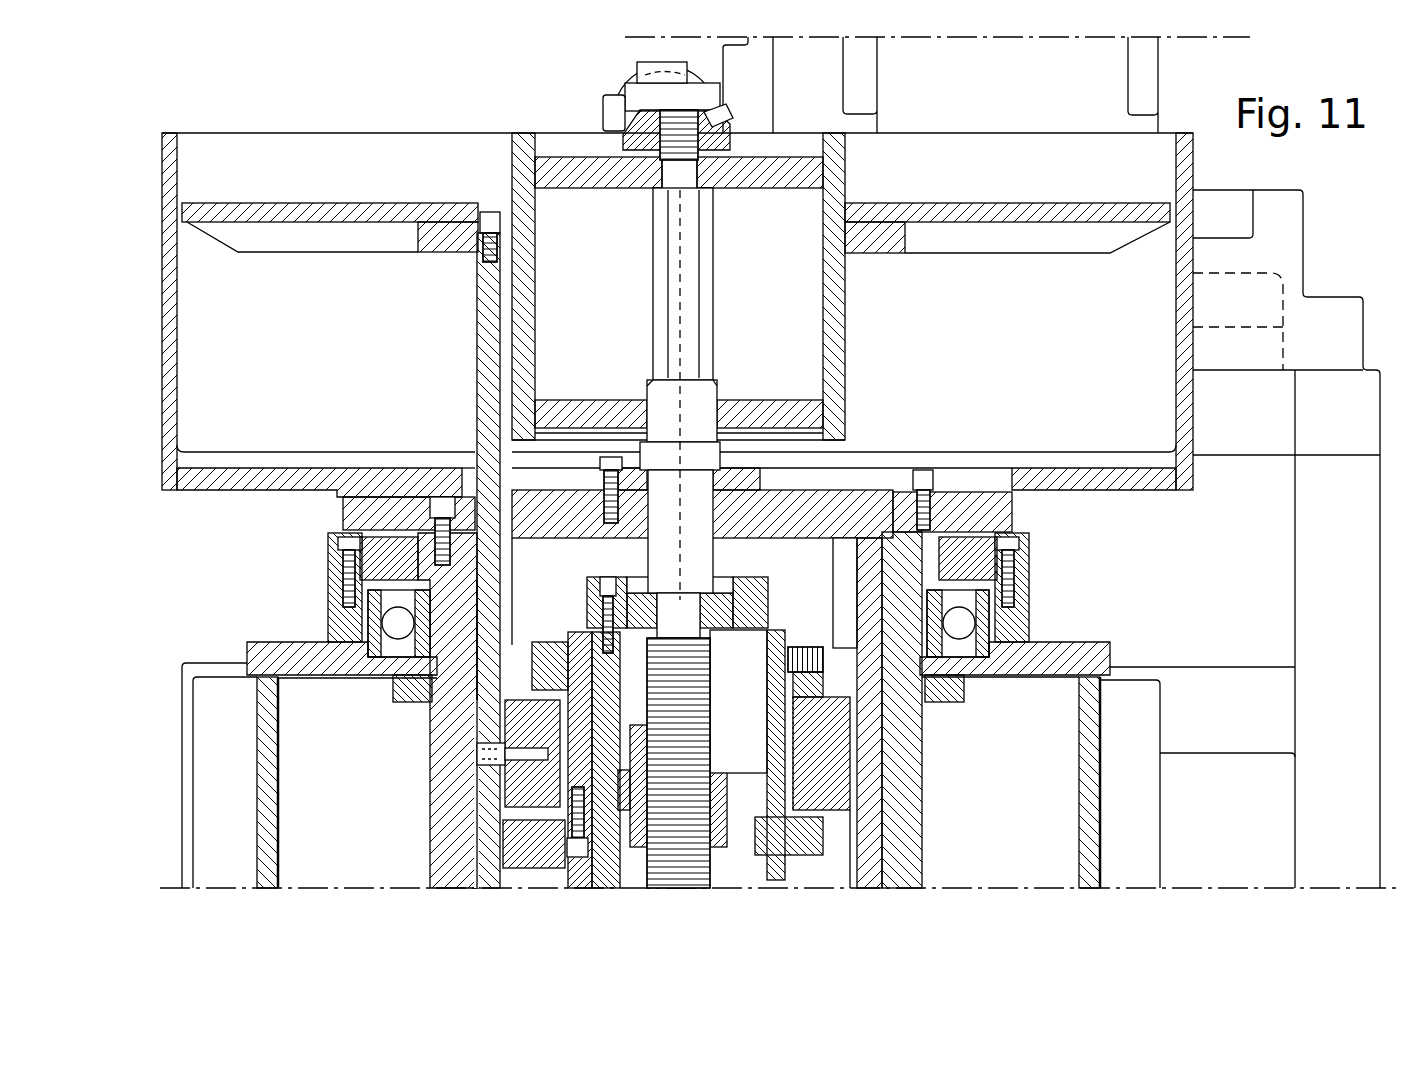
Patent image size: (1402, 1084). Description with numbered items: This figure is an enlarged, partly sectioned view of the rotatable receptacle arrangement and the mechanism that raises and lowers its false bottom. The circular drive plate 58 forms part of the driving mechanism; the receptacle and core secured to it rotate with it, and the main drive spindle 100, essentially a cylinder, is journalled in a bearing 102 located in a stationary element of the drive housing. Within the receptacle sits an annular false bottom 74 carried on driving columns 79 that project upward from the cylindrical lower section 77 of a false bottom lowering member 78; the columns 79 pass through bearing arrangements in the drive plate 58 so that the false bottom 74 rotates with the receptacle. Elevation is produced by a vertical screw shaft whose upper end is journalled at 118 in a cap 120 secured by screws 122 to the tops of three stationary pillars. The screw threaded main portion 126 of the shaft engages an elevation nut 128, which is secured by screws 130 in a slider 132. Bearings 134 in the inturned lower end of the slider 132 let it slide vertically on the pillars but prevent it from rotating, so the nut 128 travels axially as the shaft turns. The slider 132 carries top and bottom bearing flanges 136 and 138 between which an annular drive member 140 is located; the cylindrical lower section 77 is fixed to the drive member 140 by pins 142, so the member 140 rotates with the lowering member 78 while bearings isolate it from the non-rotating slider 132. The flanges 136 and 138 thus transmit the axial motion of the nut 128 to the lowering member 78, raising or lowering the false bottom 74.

The annular false bottom 74 is at (430, 205).
The driving columns 79 is at (492, 318).
The drive plate 58 is at (1000, 517).
The bearing 102 is at (1030, 612).
The screws 122 is at (582, 598).
The journal 118 is at (742, 582).
The cap 120 is at (755, 606).
The screw threaded main portion 126 is at (690, 675).
The top bearing flange 136 is at (546, 652).
The bearings 134 is at (652, 790).
The false bottom lowering member 78 is at (455, 712).
The pins 142 is at (470, 758).
The annular drive member 140 is at (500, 800).
The cylindrical lower section 77 is at (478, 812).
The main drive spindle 100 is at (435, 865).
The bottom bearing flange 138 is at (543, 858).
The elevation nut 128 is at (722, 848).
The slider 132 is at (782, 737).
The screws 130 is at (765, 790).